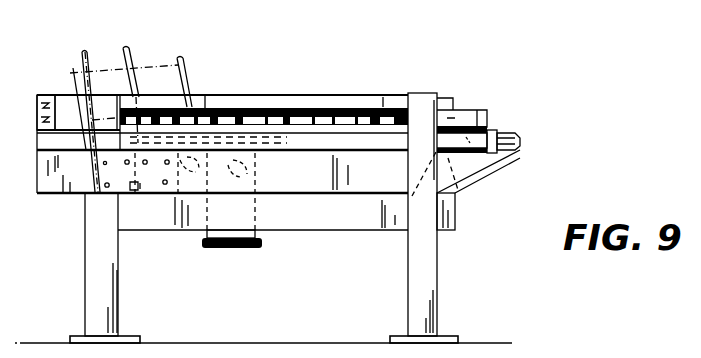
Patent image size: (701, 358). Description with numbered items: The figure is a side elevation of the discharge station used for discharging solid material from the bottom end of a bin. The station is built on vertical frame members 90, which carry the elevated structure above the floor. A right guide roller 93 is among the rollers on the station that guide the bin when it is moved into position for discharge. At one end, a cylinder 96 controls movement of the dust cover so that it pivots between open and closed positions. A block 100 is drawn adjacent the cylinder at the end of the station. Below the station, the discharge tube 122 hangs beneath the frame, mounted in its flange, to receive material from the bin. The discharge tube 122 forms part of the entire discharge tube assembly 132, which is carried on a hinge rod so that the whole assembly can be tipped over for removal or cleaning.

The vertical frame members 90 is at (438, 261).
The right guide roller 93 is at (232, 110).
The cylinder 96 is at (518, 135).
The drive block 100 is at (478, 110).
The discharge tube 122 is at (245, 248).
The discharge tube assembly 132 is at (151, 73).